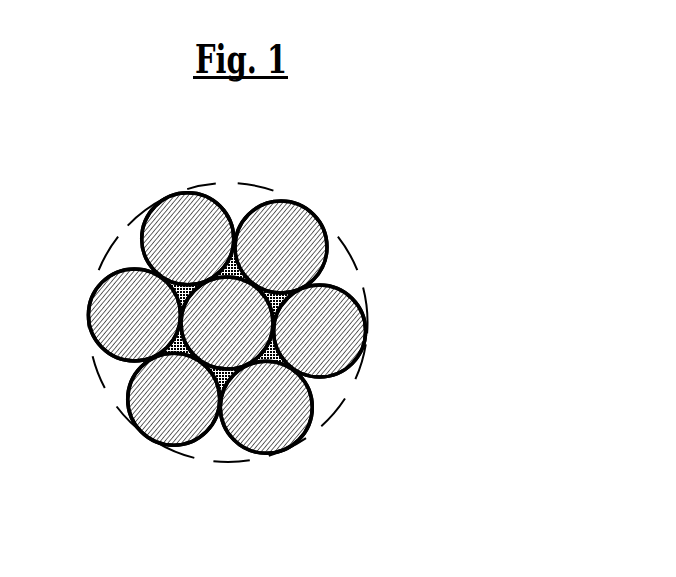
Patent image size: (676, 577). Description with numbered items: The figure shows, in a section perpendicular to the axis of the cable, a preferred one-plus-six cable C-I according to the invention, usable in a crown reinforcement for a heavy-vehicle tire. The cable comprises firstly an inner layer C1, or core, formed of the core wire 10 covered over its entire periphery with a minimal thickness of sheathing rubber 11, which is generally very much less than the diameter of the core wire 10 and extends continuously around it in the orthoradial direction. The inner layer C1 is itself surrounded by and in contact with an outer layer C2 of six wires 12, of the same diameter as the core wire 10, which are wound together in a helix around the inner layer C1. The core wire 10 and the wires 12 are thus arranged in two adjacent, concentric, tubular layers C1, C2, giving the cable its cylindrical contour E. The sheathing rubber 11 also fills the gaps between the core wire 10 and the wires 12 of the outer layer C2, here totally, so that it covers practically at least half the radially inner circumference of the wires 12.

The core wire 10 is at (228, 317).
The sheathing rubber 11 is at (234, 222).
The wires 12 is at (188, 238).
The inner layer C1 is at (207, 330).
The outer layer C2 is at (322, 387).
The cable C-I is at (380, 235).
The cylindrical contour E is at (330, 413).